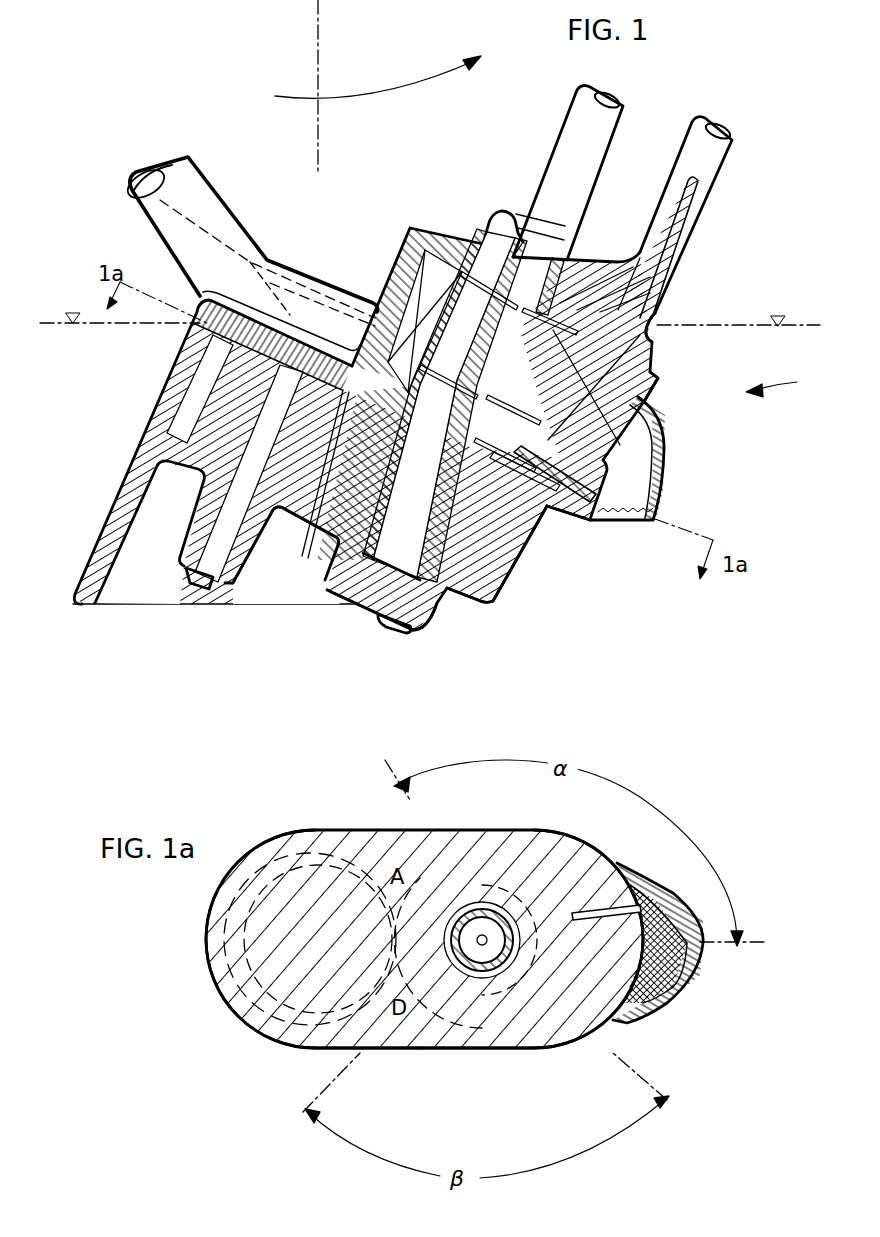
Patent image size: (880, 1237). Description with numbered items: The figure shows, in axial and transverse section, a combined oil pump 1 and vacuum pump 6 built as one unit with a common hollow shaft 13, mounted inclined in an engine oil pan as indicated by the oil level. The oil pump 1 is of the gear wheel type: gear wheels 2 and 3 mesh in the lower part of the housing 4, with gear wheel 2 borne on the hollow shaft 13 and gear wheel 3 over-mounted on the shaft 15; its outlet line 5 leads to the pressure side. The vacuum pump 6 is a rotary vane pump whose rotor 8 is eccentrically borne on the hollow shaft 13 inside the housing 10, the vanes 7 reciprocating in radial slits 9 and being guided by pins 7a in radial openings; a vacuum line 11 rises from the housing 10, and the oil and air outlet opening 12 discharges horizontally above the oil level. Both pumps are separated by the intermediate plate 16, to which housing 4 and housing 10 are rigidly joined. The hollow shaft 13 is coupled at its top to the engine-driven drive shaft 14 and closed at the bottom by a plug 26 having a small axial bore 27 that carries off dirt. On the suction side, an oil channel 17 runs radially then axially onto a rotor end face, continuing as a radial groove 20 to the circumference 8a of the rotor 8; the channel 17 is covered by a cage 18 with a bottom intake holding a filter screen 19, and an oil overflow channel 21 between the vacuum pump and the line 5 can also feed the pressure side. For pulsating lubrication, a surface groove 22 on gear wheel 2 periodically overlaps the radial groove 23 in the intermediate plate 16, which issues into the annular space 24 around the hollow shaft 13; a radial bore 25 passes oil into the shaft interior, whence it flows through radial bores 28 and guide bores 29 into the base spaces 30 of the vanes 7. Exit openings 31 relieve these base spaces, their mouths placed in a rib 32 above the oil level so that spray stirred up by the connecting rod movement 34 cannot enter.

In FIG. 1, the oil pump 1 is at (136, 382).
In FIG. 1a, the oil pump 1 is at (193, 927).
In FIG. 1, the gear wheel 2 is at (330, 538).
In FIG. 1a, the gear wheel 2 is at (625, 1028).
In FIG. 1, the gear wheel 3 is at (205, 437).
In FIG. 1a, the gear wheel 3 is at (207, 968).
In FIG. 1, the housing 4 is at (470, 603).
In FIG. 1, the line 5 is at (178, 211).
In FIG. 1, the vacuum pump 6 is at (779, 381).
In FIG. 1, the vanes 7 is at (440, 267).
In FIG. 1, the pins 7a is at (502, 304).
In FIG. 1, the rotor 8 is at (533, 365).
In FIG. 1, the circumference 8a is at (660, 352).
In FIG. 1, the radial slits 9 is at (556, 409).
In FIG. 1, the housing 10 is at (418, 240).
In FIG. 1, the vacuum line 11 is at (718, 123).
In FIG. 1, the oil and air outlet opening 12 is at (417, 243).
In FIG. 1, the hollow shaft 13 is at (400, 630).
In FIG. 1a, the hollow shaft 13 is at (492, 905).
In FIG. 1, the drive shaft 14 is at (563, 160).
In FIG. 1, the shaft 15 is at (200, 587).
In FIG. 1, the intermediate plate 16 is at (210, 322).
In FIG. 1a, the intermediate plate 16 is at (287, 1033).
In FIG. 1, the oil channel 17 is at (613, 462).
In FIG. 1a, the oil channel 17 is at (600, 910).
In FIG. 1, the cage 18 is at (660, 480).
In FIG. 1a, the cage 18 is at (697, 982).
In FIG. 1, the filter screen 19 is at (617, 507).
In FIG. 1a, the filter screen 19 is at (650, 892).
In FIG. 1, the radial groove 20 is at (627, 422).
In FIG. 1, the oil overflow channel 21 is at (325, 283).
In FIG. 1, the surface groove 22 is at (527, 507).
In FIG. 1a, the surface groove 22 is at (455, 1000).
In FIG. 1, the radial groove 23 is at (520, 557).
In FIG. 1a, the radial groove 23 is at (412, 1038).
In FIG. 1, the annular space 24 is at (490, 446).
In FIG. 1a, the annular space 24 is at (498, 975).
In FIG. 1, the radial bore 25 is at (478, 448).
In FIG. 1a, the radial bore 25 is at (480, 975).
In FIG. 1, the plug 26 is at (352, 610).
In FIG. 1, the axial bore 27 is at (376, 614).
In FIG. 1a, the axial bore 27 is at (481, 936).
In FIG. 1, the radial bores 28 is at (460, 353).
In FIG. 1, the guide bores 29 is at (478, 270).
In FIG. 1, the base spaces 30 is at (640, 310).
In FIG. 1, the exit openings 31 is at (630, 280).
In FIG. 1, the rib 32 is at (680, 208).
In FIG. 1, the connecting rod movement 34 is at (365, 92).